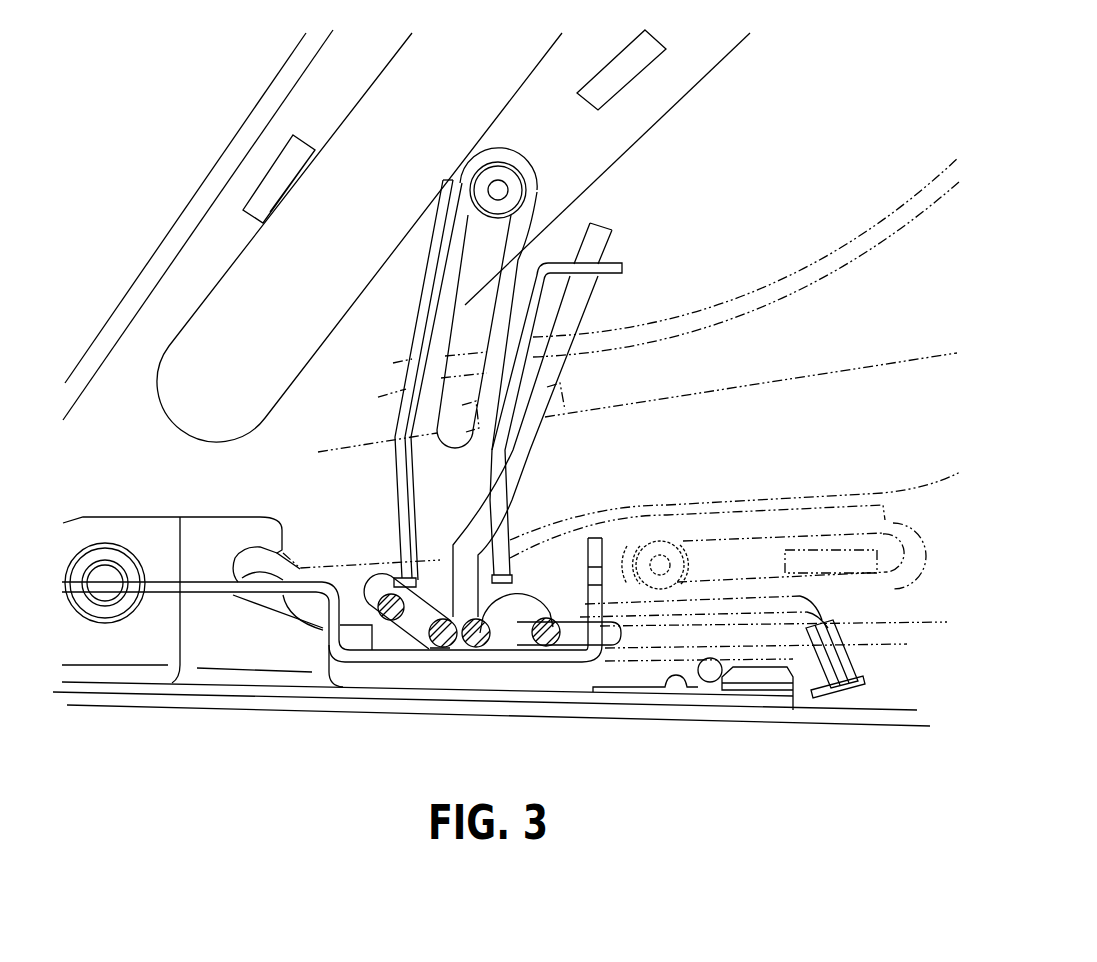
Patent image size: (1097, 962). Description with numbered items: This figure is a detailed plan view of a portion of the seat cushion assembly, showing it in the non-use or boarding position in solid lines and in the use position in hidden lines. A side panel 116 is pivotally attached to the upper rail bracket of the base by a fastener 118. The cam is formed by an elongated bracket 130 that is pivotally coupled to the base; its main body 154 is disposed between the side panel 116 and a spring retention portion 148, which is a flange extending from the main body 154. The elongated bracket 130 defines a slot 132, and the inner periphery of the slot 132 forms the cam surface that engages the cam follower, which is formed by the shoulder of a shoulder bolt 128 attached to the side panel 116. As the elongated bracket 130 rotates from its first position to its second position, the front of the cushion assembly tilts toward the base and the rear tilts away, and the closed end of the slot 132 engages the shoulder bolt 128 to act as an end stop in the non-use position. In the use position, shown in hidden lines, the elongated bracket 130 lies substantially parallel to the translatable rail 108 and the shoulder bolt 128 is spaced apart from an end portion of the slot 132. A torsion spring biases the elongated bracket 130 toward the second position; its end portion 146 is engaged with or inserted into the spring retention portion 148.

The translatable rail 108 is at (240, 702).
The side panel 116 is at (179, 229).
The fastener 118 is at (105, 551).
The shoulder bolt 128 is at (499, 178).
The elongated bracket 130 is at (459, 310).
The slot 132 is at (898, 548).
The end portion 146 is at (888, 653).
The spring retention portion 148 is at (612, 264).
The main body 154 is at (416, 451).